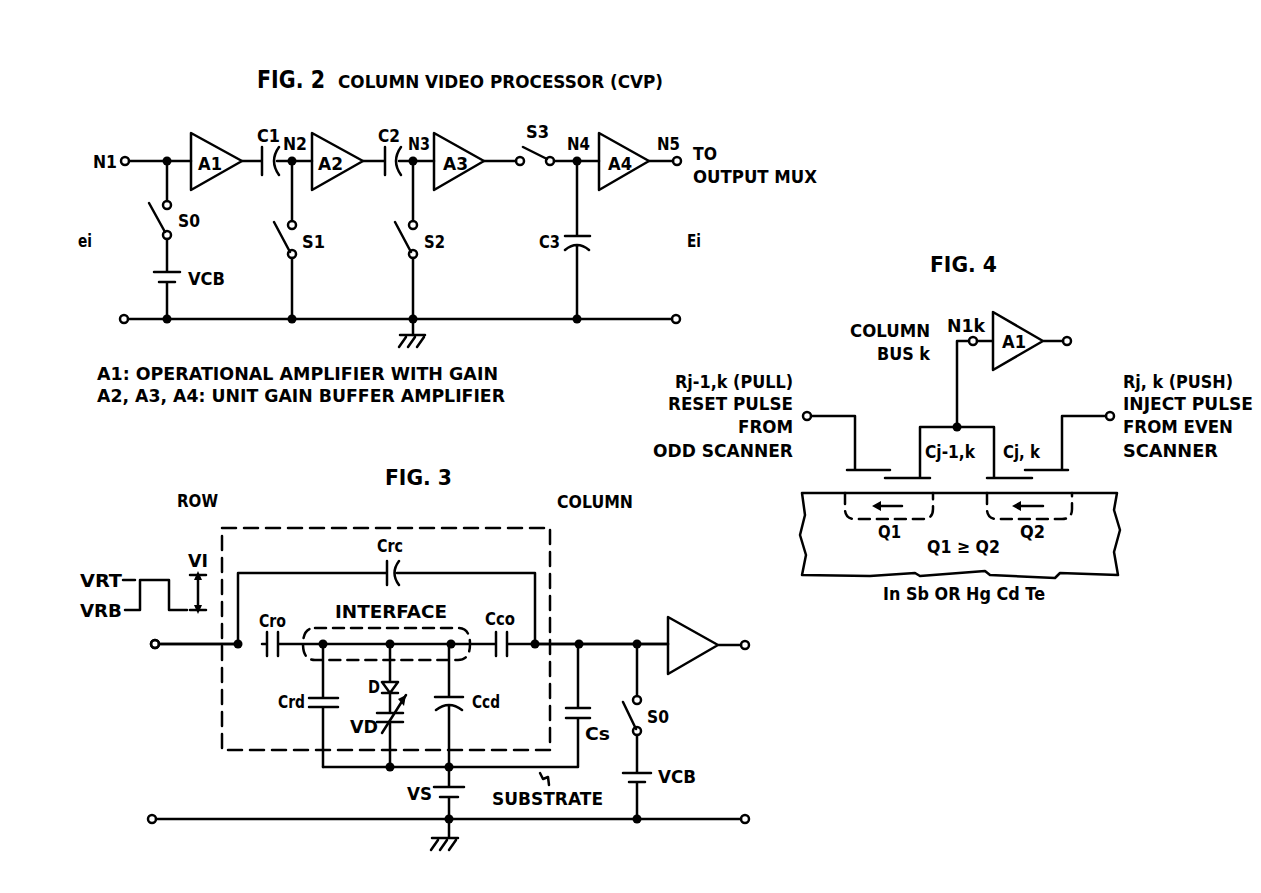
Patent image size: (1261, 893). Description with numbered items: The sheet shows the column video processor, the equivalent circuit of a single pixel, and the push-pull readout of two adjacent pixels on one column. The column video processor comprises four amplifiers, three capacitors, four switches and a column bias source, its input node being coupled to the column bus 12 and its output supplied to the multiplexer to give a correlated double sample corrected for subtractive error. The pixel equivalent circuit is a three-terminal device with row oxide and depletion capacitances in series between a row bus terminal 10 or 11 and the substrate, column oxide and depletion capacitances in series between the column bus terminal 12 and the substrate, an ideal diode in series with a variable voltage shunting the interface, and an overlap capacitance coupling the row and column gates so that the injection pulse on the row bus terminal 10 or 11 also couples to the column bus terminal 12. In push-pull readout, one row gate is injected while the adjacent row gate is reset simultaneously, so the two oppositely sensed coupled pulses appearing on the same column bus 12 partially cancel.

In FIG. 3, the row bus terminal 10 is at (210, 652).
In FIG. 4, the row bus terminal 10 is at (840, 412).
In FIG. 3, the row bus terminal 11 is at (194, 663).
In FIG. 4, the row bus terminal 11 is at (1080, 412).
In FIG. 3, the column bus terminal 12 is at (561, 641).
In FIG. 4, the column bus terminal 12 is at (953, 362).